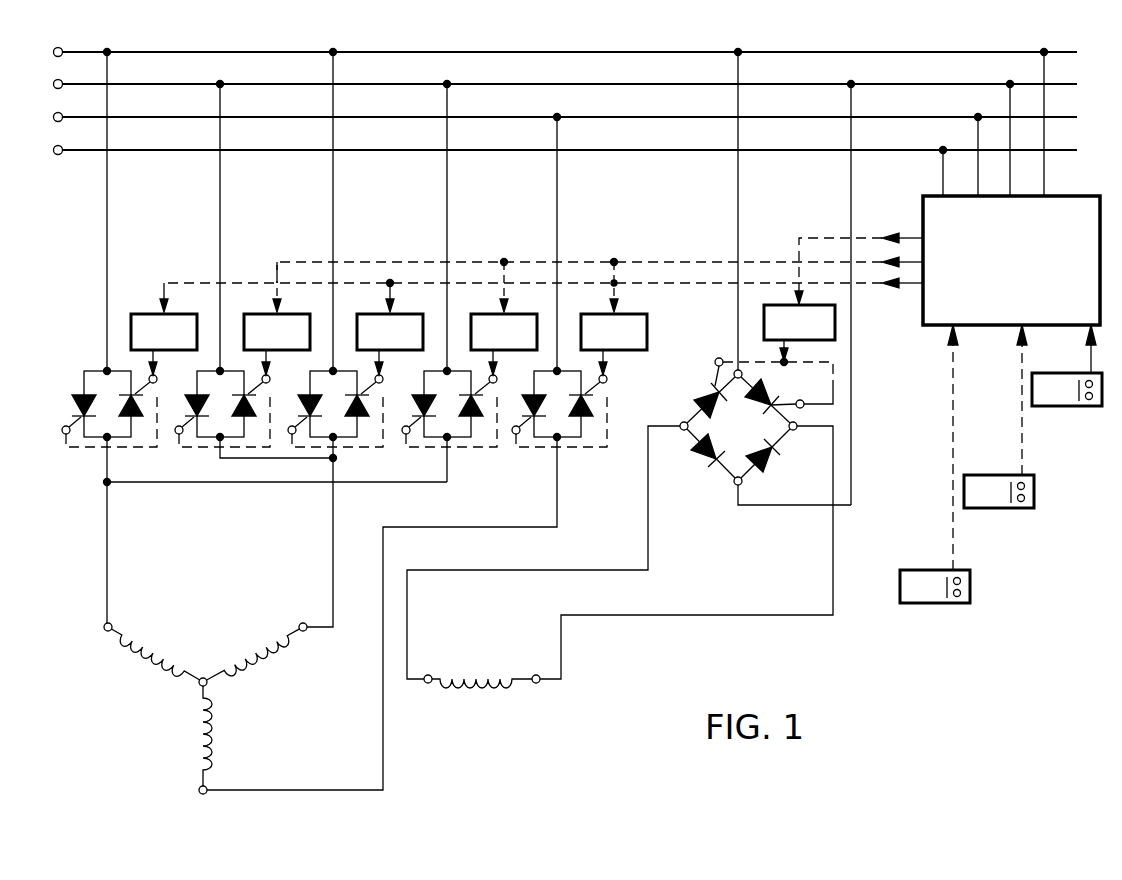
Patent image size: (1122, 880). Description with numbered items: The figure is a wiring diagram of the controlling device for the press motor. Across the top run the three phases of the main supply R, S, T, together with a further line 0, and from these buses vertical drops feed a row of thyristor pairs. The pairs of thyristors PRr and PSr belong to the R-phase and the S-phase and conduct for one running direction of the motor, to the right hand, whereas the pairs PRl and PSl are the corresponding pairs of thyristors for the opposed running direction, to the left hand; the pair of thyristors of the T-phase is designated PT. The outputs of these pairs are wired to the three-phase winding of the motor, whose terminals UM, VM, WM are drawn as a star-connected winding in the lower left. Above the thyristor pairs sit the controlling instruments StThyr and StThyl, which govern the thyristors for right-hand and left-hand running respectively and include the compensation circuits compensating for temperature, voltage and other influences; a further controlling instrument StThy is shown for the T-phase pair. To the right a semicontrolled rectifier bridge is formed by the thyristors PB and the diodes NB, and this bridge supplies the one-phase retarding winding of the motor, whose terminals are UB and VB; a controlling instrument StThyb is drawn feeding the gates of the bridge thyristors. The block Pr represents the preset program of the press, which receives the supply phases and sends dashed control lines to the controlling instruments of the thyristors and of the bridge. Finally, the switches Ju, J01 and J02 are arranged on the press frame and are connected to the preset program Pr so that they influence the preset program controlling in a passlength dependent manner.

The main supply phase R is at (555, 207).
The main supply phase S is at (556, 290).
The main supply phase T is at (556, 240).
The neutral line 0 is at (556, 169).
The pair of thyristors of the R-phase for right-hand running PRr is at (254, 496).
The pair of thyristors of the S-phase for left-hand running PSl is at (256, 415).
The pair of thyristors of the R-phase for left-hand running PRl is at (335, 498).
The pair of thyristors of the S-phase for right-hand running PSr is at (449, 425).
The pair of thyristors of the T-phase PT is at (407, 579).
The controlling instrument for right-hand running thyristors StThyr is at (334, 317).
The controlling instrument for left-hand running thyristors StThyl is at (333, 318).
The thyristor firing control unit St_Thy (phase T) StThy is at (614, 317).
The firing control unit St_Thyb for braking bridge StThyb is at (779, 347).
The preset program Pr is at (632, 383).
The thyristors of the semicontrolled rectifier bridge PB is at (749, 394).
The diodes of the semicontrolled rectifier bridge NB is at (761, 467).
The retarding winding terminal UB is at (543, 557).
The retarding winding terminal VB is at (679, 554).
The three-phase motor winding terminal U UM is at (155, 648).
The three-phase motor winding terminal V VM is at (259, 641).
The three-phase motor winding terminal W WM is at (190, 744).
The switch J02 is at (1067, 389).
The switch J01 is at (999, 491).
The switch Ju is at (935, 586).